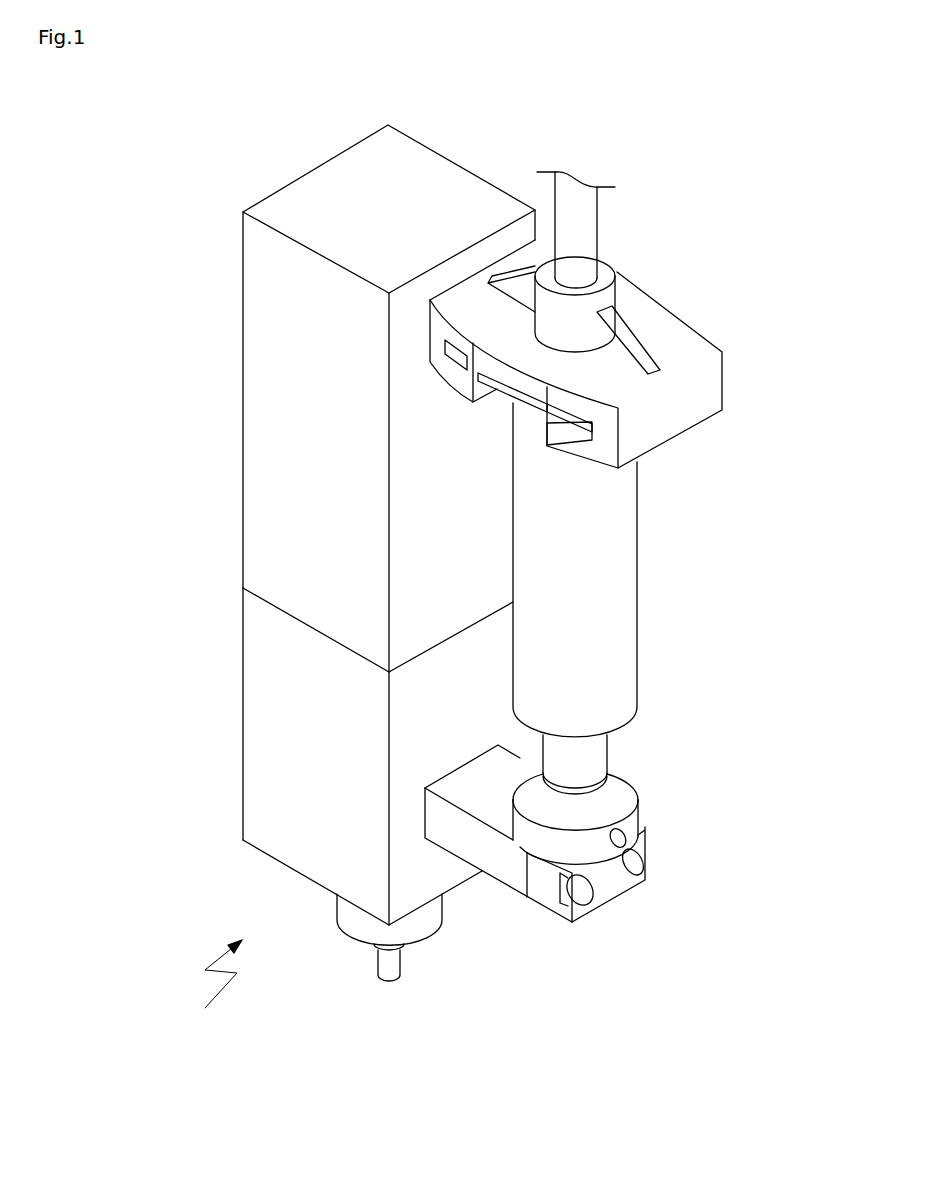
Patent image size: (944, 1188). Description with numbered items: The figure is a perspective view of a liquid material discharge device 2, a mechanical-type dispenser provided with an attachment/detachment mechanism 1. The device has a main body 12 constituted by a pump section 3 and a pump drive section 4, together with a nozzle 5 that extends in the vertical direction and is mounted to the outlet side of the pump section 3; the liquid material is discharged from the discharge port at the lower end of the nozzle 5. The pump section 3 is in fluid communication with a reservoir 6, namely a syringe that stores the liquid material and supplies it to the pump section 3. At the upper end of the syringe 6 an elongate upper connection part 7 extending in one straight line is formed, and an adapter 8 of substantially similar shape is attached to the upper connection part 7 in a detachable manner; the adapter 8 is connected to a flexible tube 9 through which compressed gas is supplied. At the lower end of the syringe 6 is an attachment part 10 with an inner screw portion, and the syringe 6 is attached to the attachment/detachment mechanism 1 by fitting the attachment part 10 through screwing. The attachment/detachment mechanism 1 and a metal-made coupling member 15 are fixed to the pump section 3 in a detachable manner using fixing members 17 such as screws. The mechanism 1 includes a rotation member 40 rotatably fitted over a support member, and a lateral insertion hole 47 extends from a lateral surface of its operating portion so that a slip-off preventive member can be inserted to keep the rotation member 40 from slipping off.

The attachment/detachment mechanism 1 is at (672, 897).
The liquid material discharge device 2 is at (217, 986).
The pump section 3 is at (330, 756).
The pump drive section 4 is at (342, 398).
The nozzle 5 is at (379, 974).
The reservoir 6 is at (640, 570).
The upper connection part 7 is at (621, 440).
The adapter 8 is at (627, 354).
The flexible tube 9 is at (664, 230).
The attachment part 10 is at (671, 749).
The main body 12 is at (304, 525).
The coupling member 15 is at (498, 901).
The fixing members 17 is at (649, 893).
The rotation member 40 is at (575, 897).
The lateral insertion hole 47 is at (719, 830).